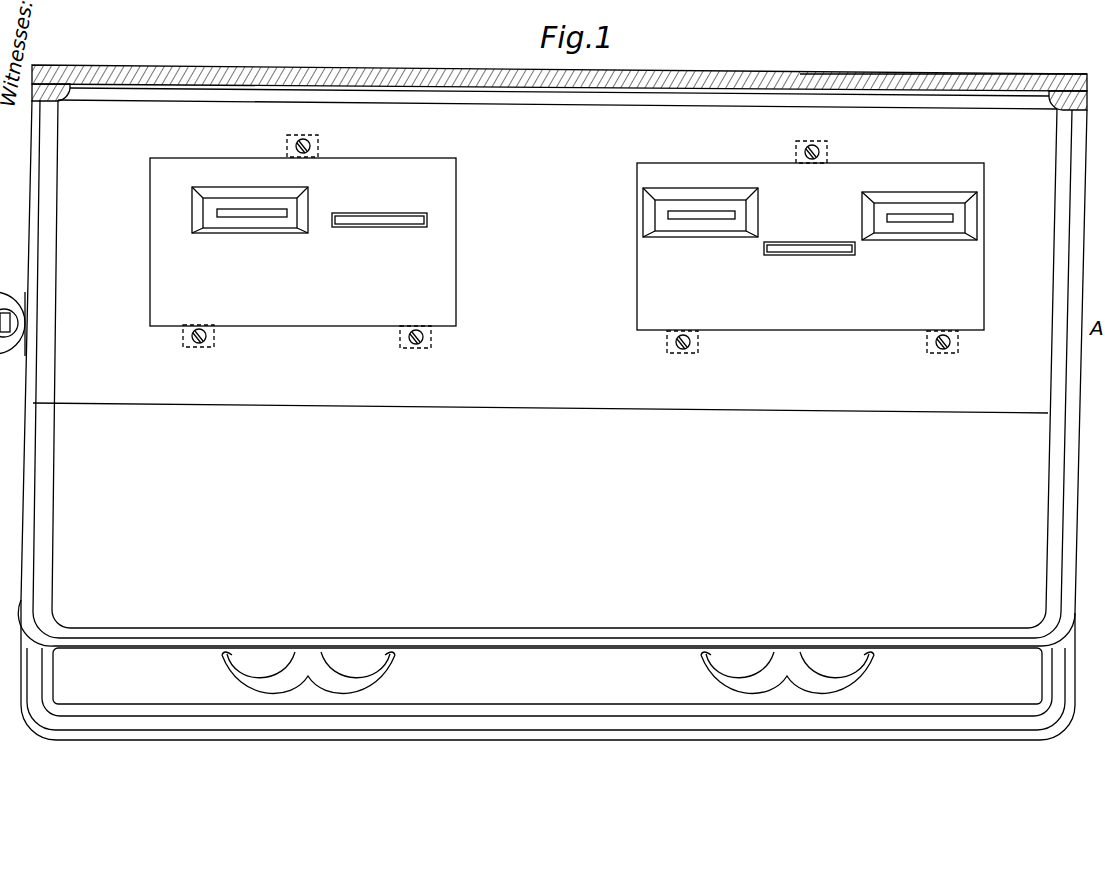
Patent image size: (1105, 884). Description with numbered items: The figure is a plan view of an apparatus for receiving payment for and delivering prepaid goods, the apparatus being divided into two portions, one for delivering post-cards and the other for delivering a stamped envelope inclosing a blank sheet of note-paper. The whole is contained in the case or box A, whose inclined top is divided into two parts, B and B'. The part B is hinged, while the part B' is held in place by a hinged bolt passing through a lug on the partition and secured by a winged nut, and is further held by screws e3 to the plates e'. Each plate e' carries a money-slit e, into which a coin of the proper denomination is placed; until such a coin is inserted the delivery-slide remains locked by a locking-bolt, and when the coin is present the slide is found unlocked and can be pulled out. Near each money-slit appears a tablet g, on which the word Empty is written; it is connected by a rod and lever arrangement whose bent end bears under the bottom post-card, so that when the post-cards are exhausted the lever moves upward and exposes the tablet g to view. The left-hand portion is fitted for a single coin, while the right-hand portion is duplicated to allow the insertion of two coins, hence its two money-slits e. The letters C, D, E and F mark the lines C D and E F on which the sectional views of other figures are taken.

The case or box A is at (253, 112).
The hinged part of the inclined top B is at (543, 451).
The part of the inclined top B' is at (540, 356).
The section line C D C is at (515, 128).
The section line C D is at (503, 693).
The section line E F E is at (855, 118).
The section line E F is at (843, 700).
The money-slit e is at (584, 224).
The plate e' is at (567, 244).
The screws e3 is at (570, 244).
The tablet g is at (381, 222).